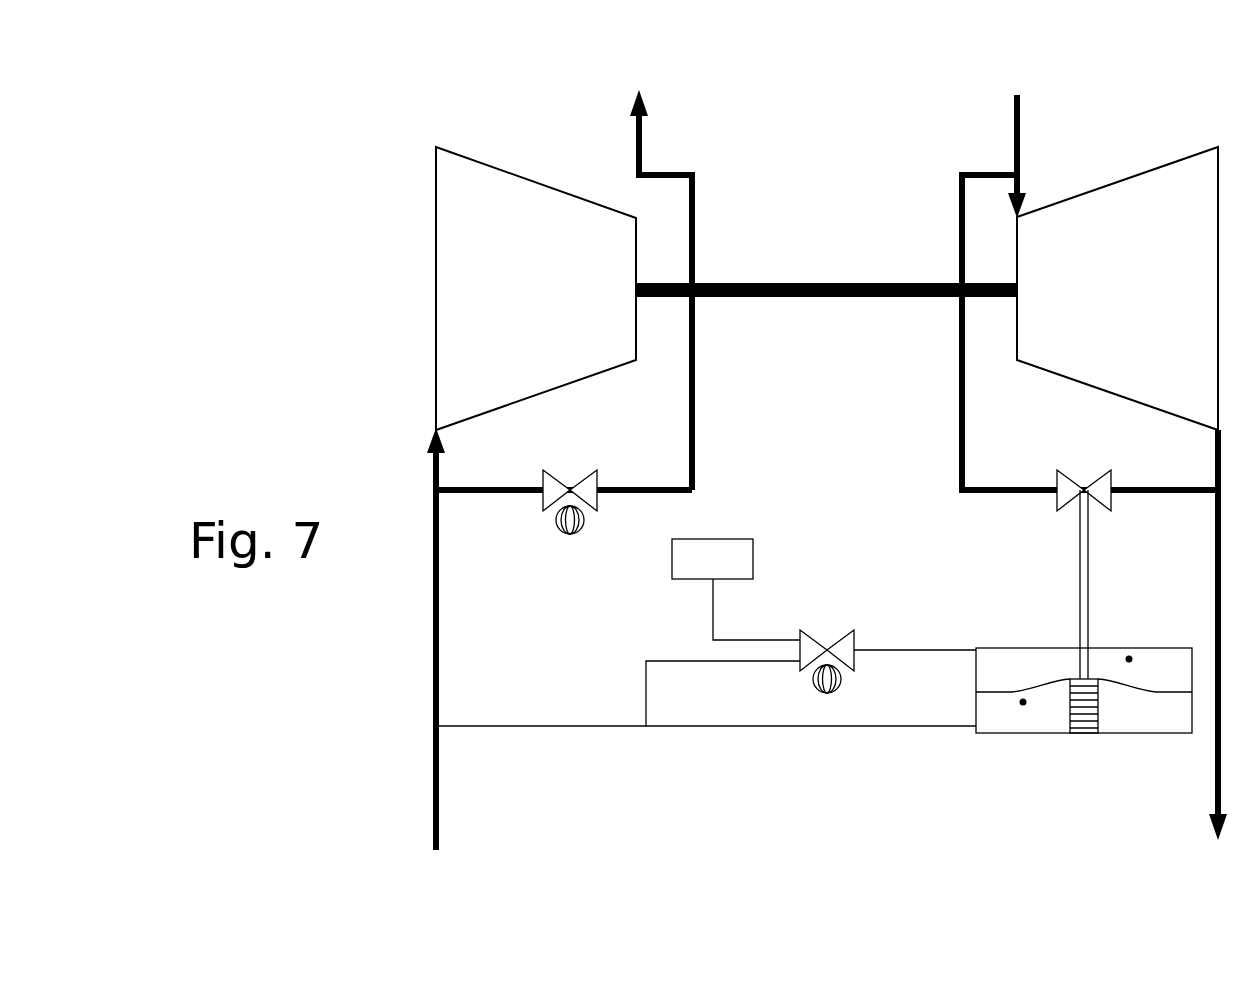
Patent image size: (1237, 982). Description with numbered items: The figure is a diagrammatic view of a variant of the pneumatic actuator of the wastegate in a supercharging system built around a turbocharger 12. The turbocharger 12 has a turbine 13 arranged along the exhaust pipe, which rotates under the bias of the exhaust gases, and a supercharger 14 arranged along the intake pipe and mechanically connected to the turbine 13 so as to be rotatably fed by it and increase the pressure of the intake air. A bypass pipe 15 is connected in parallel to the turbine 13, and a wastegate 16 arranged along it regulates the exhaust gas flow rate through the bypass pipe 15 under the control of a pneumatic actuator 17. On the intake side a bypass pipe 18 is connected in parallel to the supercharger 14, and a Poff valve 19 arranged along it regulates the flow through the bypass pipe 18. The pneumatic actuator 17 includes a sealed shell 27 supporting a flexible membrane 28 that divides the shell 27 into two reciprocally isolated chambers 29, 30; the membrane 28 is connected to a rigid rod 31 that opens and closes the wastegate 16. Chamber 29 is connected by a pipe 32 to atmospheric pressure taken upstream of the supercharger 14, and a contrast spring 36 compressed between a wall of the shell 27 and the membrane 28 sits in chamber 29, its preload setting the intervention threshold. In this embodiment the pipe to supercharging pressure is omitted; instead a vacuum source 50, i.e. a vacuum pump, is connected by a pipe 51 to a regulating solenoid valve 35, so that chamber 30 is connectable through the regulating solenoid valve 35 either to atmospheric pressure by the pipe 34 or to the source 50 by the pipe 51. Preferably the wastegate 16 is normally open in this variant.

The turbocharger 12 is at (843, 76).
The turbine 13 is at (1114, 198).
The supercharger 14 is at (553, 205).
The bypass pipe 15 is at (960, 418).
The wastegate 16 is at (1104, 488).
The pneumatic actuator 17 is at (924, 588).
The bypass pipe 18 is at (695, 425).
The Poff valve 19 is at (596, 488).
The sealed shell 27 is at (1143, 734).
The flexible membrane 28 is at (1138, 687).
The chamber 29 is at (1021, 704).
The chamber 30 is at (1128, 656).
The rigid rod 31 is at (1080, 541).
The pipe 32 is at (791, 727).
The pipe 34 is at (650, 660).
The regulating solenoid valve 35 is at (848, 664).
The contrast spring 36 is at (1084, 722).
The vacuum source 50 is at (712, 559).
The pipe 51 is at (714, 601).